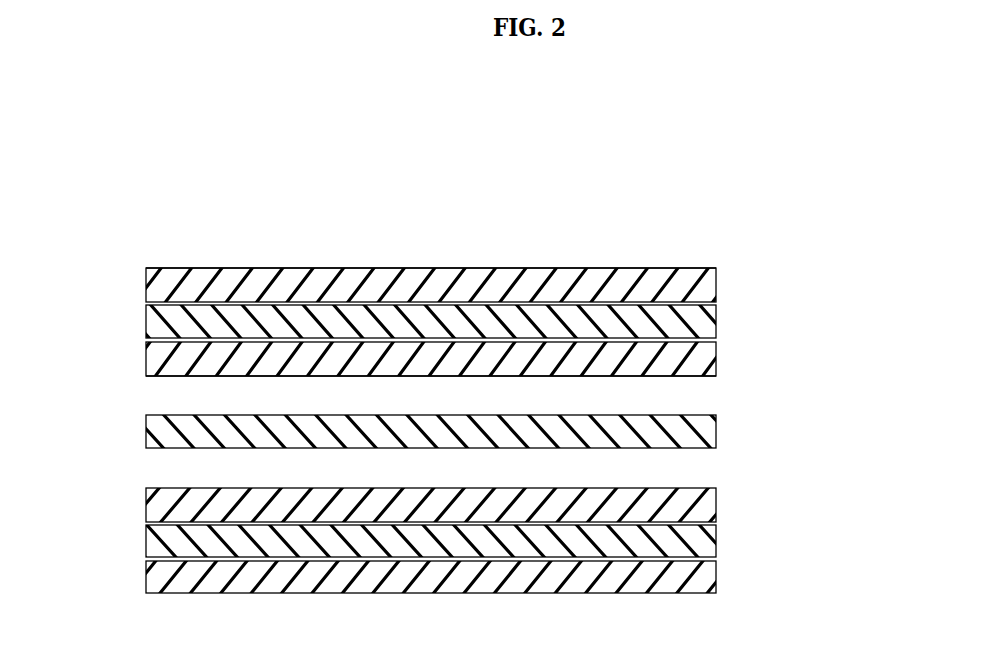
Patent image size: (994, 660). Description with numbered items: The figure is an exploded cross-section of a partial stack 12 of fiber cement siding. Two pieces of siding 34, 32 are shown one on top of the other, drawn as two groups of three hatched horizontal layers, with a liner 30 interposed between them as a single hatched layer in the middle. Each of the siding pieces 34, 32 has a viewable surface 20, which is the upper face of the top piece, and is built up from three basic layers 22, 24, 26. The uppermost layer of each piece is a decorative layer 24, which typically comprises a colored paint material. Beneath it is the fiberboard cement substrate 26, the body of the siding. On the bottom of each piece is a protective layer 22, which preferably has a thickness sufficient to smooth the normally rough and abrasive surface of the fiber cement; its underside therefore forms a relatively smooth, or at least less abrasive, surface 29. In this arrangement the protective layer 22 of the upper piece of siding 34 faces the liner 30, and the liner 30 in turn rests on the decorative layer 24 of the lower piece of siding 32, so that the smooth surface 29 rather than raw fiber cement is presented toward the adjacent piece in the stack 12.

The partial stack 12 is at (272, 240).
The viewable surface 20 is at (503, 265).
The protective layer 22 is at (160, 358).
The decorative layer 24 is at (160, 285).
The fiberboard cement substrate 26 is at (160, 322).
The relatively smooth surface 29 is at (630, 380).
The liner 30 is at (160, 432).
The siding piece 32 is at (786, 542).
The siding piece 34 is at (786, 323).